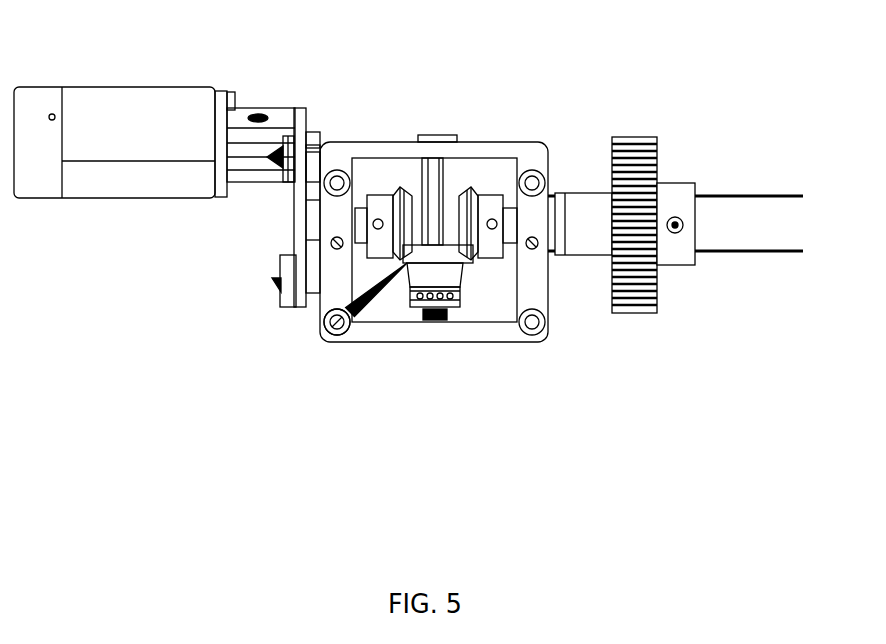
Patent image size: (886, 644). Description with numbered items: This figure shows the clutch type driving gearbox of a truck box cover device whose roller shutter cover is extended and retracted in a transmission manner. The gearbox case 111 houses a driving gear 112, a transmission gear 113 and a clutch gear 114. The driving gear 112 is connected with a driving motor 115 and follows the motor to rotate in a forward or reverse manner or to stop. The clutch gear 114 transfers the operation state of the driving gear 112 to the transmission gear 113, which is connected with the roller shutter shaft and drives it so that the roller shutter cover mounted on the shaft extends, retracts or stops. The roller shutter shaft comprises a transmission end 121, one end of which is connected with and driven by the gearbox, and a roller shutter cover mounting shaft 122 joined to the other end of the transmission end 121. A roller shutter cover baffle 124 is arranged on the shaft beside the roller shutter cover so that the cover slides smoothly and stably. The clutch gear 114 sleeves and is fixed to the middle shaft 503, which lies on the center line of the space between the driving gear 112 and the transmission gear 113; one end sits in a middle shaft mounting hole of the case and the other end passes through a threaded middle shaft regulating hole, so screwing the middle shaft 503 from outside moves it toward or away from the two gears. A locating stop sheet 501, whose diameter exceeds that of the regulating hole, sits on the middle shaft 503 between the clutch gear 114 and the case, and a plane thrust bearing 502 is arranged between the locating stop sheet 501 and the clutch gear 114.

The gearbox case 111 is at (573, 353).
The driving gear 112 is at (343, 143).
The transmission gear 113 is at (518, 135).
The clutch gear 114 is at (327, 332).
The driving motor 115 is at (173, 130).
The transmission end 121 is at (577, 208).
The roller shutter cover mounting shaft 122 is at (720, 220).
The roller shutter cover baffle 124 is at (637, 147).
The locating stop sheet 501 is at (468, 370).
The plane thrust bearing 502 is at (362, 355).
The middle shaft 503 is at (397, 110).